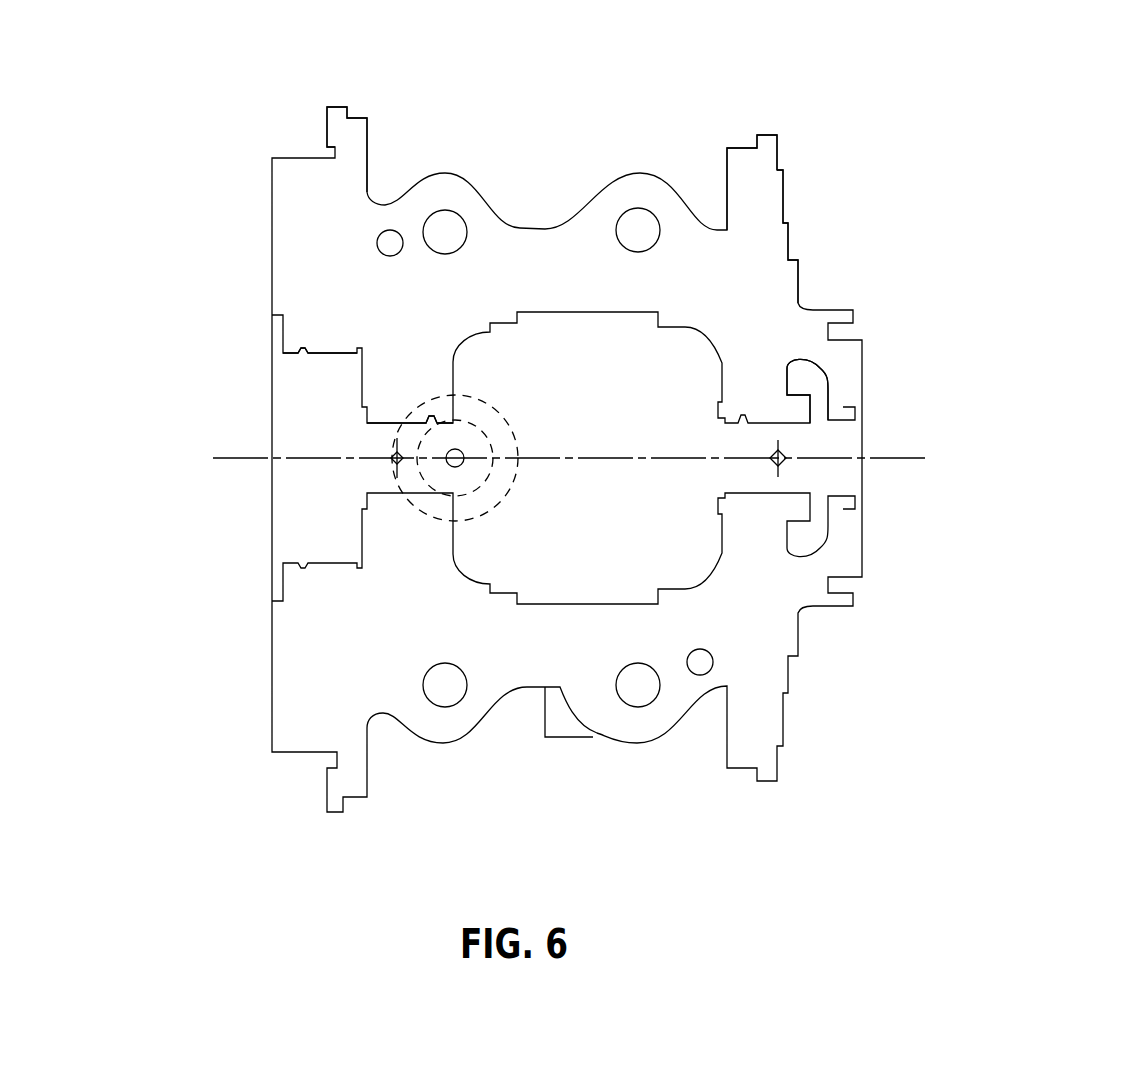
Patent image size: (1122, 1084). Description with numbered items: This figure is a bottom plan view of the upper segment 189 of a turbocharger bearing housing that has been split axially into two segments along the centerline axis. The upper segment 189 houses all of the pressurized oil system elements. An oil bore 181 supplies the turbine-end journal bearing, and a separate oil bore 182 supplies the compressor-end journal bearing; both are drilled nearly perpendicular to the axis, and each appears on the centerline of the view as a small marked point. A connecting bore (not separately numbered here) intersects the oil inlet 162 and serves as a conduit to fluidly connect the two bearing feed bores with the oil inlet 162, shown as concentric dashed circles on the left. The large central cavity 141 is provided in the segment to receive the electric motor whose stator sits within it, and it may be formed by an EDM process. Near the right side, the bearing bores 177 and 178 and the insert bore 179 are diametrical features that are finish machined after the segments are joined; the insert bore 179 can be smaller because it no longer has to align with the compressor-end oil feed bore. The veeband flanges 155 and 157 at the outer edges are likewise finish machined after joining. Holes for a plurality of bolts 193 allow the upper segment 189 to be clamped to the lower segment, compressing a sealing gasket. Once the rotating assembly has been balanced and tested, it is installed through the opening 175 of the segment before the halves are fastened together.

The cavity 141 is at (628, 540).
The veeband flange 155 is at (760, 163).
The veeband flange 157 is at (350, 137).
The oil inlet 162 is at (467, 495).
The opening 175 is at (640, 392).
The bearing bore 177 is at (795, 433).
The bearing bore 178 is at (423, 433).
The insert bore 179 is at (318, 357).
The oil bore 181 is at (787, 467).
The oil bore 182 is at (393, 447).
The upper segment 189 is at (770, 253).
The bolts 193 is at (647, 235).